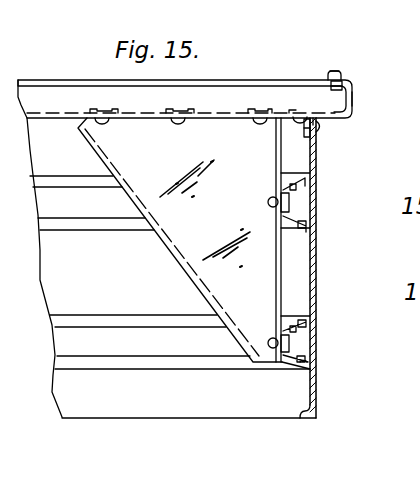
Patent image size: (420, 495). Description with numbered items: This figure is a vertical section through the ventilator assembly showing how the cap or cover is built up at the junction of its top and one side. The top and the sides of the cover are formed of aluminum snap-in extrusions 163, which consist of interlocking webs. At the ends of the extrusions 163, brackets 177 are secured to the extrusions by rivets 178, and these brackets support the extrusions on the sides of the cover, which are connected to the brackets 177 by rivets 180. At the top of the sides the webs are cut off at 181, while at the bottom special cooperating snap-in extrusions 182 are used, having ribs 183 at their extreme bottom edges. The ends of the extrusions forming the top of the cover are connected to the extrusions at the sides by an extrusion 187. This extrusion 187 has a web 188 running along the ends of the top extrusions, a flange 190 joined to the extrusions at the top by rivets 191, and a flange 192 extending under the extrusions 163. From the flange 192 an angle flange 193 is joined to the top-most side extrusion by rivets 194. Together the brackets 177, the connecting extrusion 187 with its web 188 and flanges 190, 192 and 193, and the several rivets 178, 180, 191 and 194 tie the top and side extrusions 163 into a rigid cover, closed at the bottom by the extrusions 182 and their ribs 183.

The snap-in extrusion 163 is at (206, 77).
The bracket 177 is at (213, 169).
The rivet 178 is at (262, 116).
The rivet 180 is at (268, 201).
The cut-off of web 181 is at (293, 112).
The cooperating snap-in extrusion 182 is at (318, 393).
The rib 183 is at (305, 420).
The extrusion 187 is at (350, 83).
The web 188 is at (355, 108).
The flange 190 is at (341, 75).
The rivet 191 is at (338, 70).
The flange 192 is at (343, 118).
The angle flange 193 is at (318, 132).
The rivet 194 is at (304, 131).